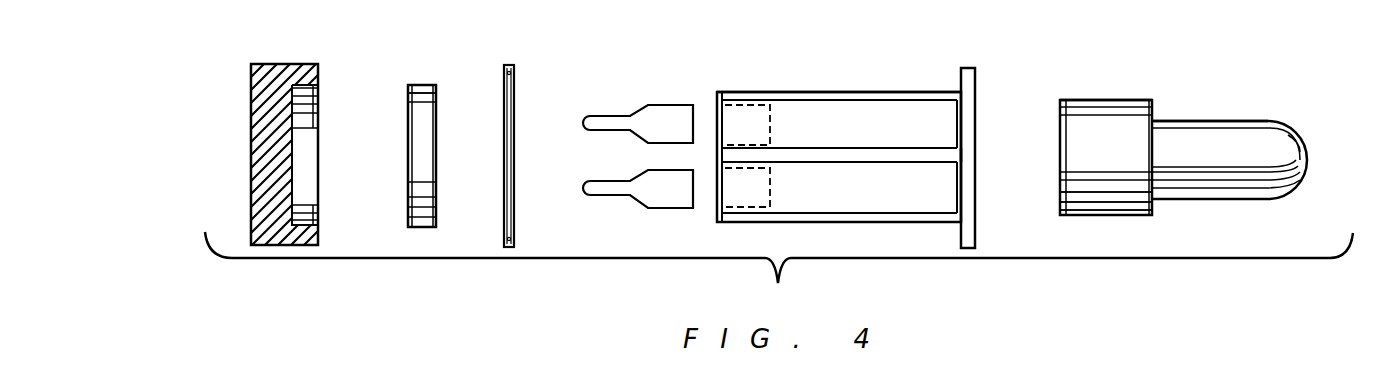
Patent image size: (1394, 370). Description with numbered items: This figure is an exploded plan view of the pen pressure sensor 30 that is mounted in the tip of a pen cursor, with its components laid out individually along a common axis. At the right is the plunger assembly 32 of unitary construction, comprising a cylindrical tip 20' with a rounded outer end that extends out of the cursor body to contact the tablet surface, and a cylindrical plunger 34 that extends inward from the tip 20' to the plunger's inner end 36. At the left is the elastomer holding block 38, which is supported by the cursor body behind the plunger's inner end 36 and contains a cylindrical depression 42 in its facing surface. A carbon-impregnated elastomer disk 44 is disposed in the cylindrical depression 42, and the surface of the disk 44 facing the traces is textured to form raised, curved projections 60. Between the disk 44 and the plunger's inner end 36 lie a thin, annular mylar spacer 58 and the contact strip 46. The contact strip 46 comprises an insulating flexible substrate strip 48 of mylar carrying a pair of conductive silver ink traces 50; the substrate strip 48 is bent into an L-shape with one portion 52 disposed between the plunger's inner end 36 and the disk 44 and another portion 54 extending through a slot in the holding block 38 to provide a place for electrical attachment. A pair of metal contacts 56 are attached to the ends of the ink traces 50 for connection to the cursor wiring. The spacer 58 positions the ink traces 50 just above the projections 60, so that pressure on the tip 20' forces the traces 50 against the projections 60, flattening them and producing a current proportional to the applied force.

The cylindrical tip 20' is at (1257, 157).
The pen pressure sensor 30 is at (1243, 49).
The plunger assembly 32 is at (1184, 106).
The cylindrical plunger 34 is at (1127, 108).
The plunger's inner end 36 is at (1062, 195).
The elastomer holding block 38 is at (250, 165).
The cylindrical depression 42 is at (312, 148).
The carbon-impregnated elastomer disk 44 is at (418, 86).
The contact strip 46 is at (908, 77).
The insulating flexible substrate strip 48 is at (977, 78).
The conductive silver ink traces 50 is at (777, 112).
The one portion of the substrate strip 52 is at (977, 158).
The another portion of the substrate strip 54 is at (863, 92).
The metal contacts 56 is at (648, 117).
The annular mylar spacer 58 is at (516, 160).
The raised curved projections 60 is at (438, 164).